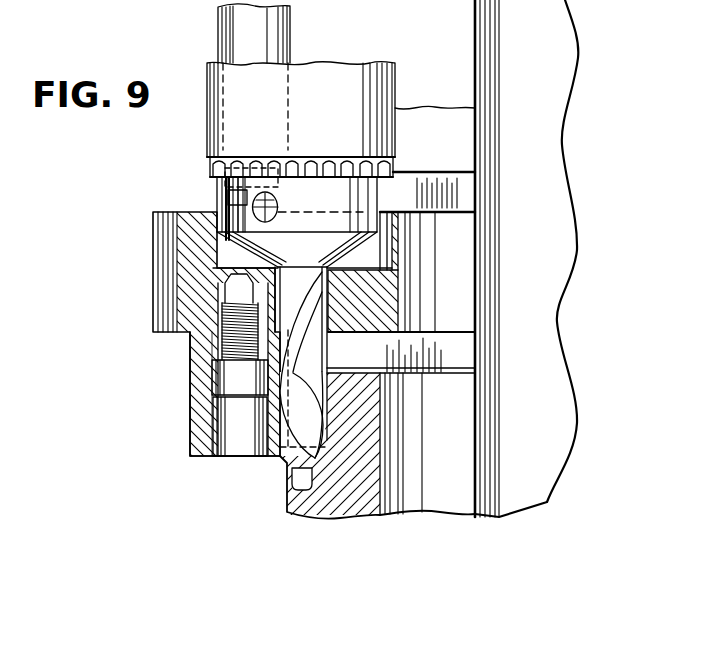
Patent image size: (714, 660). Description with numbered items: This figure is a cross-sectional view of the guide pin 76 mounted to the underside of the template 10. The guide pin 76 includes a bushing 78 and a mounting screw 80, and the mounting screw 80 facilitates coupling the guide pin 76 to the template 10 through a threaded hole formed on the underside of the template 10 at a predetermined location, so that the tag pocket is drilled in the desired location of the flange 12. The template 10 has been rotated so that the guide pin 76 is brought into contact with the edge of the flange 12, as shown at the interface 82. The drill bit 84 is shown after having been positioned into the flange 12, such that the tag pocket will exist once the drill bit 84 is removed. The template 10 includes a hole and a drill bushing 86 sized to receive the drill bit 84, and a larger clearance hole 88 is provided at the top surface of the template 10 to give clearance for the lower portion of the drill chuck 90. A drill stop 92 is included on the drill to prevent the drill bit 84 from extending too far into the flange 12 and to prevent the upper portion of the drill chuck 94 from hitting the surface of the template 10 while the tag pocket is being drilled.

The template 10 is at (160, 255).
The flange 12 is at (342, 508).
The guide pin 76 is at (186, 413).
The bushing 78 is at (192, 430).
The mounting screw 80 is at (237, 390).
The interface 82 is at (327, 450).
The drill bit 84 is at (318, 423).
The drill bushing 86 is at (333, 307).
The clearance hole 88 is at (380, 242).
The drill chuck lower portion 90 is at (380, 198).
The drill stop 92 is at (220, 193).
The drill chuck upper portion 94 is at (343, 72).